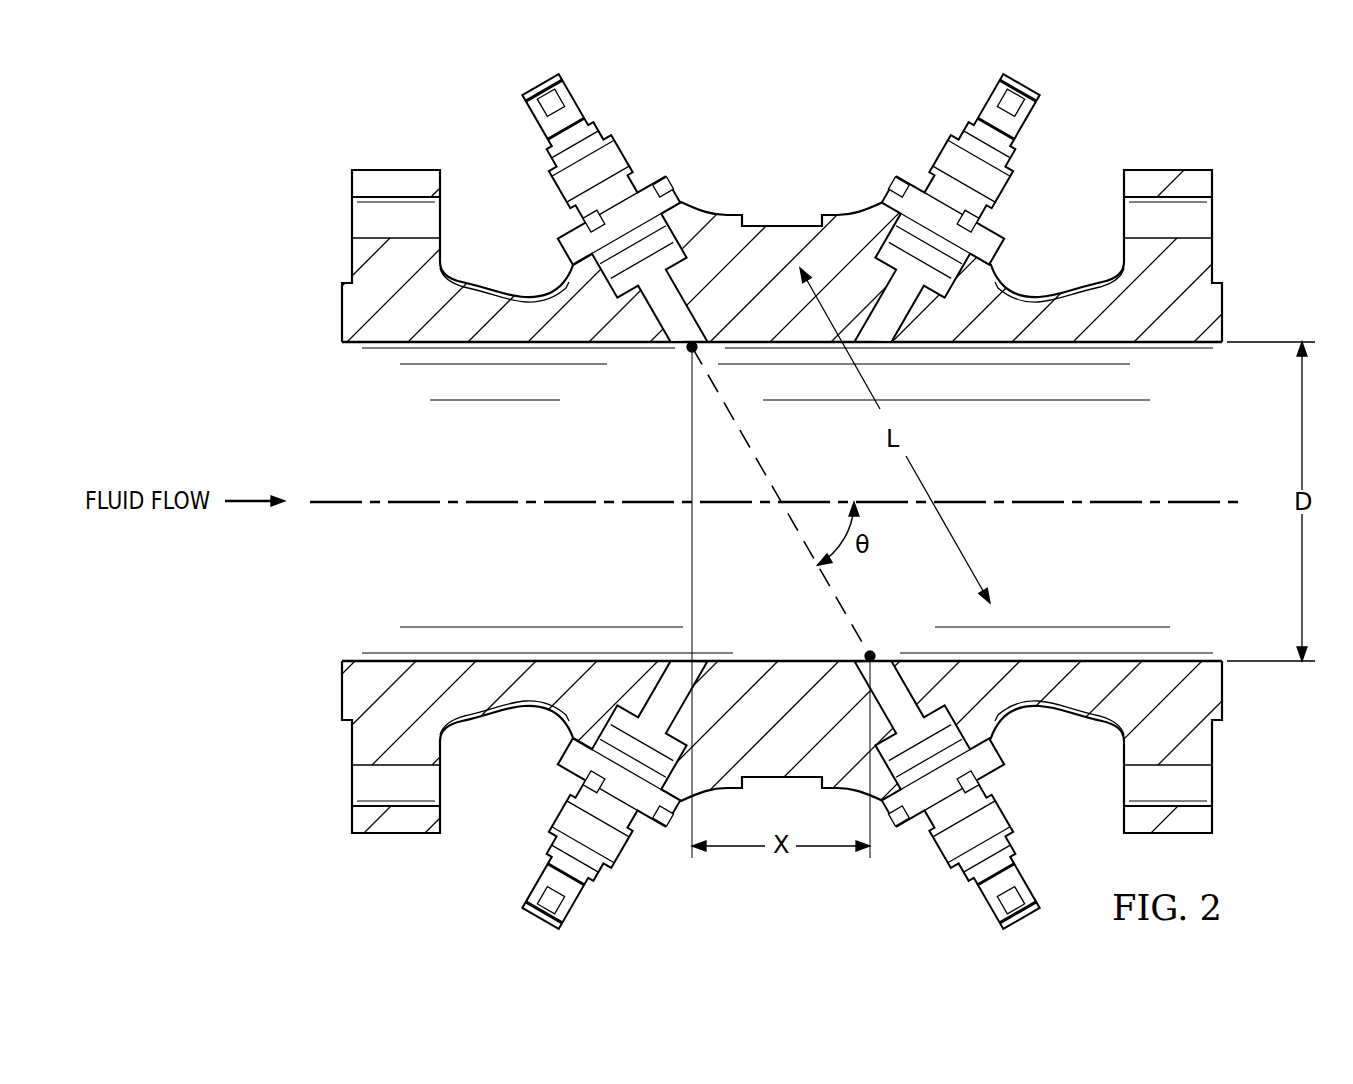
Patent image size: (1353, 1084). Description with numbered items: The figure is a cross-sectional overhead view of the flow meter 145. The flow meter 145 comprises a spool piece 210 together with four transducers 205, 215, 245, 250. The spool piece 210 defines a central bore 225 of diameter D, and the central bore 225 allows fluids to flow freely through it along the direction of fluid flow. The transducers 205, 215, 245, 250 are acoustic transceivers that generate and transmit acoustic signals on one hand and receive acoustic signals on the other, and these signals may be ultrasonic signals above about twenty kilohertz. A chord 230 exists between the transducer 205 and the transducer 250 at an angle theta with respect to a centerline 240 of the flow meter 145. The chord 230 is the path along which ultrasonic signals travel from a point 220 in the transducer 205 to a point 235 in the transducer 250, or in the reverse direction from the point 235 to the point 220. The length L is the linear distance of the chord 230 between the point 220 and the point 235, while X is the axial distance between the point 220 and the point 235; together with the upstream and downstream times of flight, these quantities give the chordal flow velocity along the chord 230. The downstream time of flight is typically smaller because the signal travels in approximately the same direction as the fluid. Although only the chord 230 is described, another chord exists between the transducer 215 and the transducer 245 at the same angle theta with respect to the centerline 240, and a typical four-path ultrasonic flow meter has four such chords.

The flow meter 145 is at (768, 501).
The transducer 205 is at (651, 130).
The spool piece 210 is at (783, 226).
The transducer 215 is at (973, 106).
The point 220 is at (688, 350).
The central bore 225 is at (1057, 477).
The chord 230 is at (834, 597).
The point 235 is at (878, 650).
The centerline 240 is at (1062, 508).
The transducer 245 is at (577, 905).
The transducer 250 is at (983, 905).